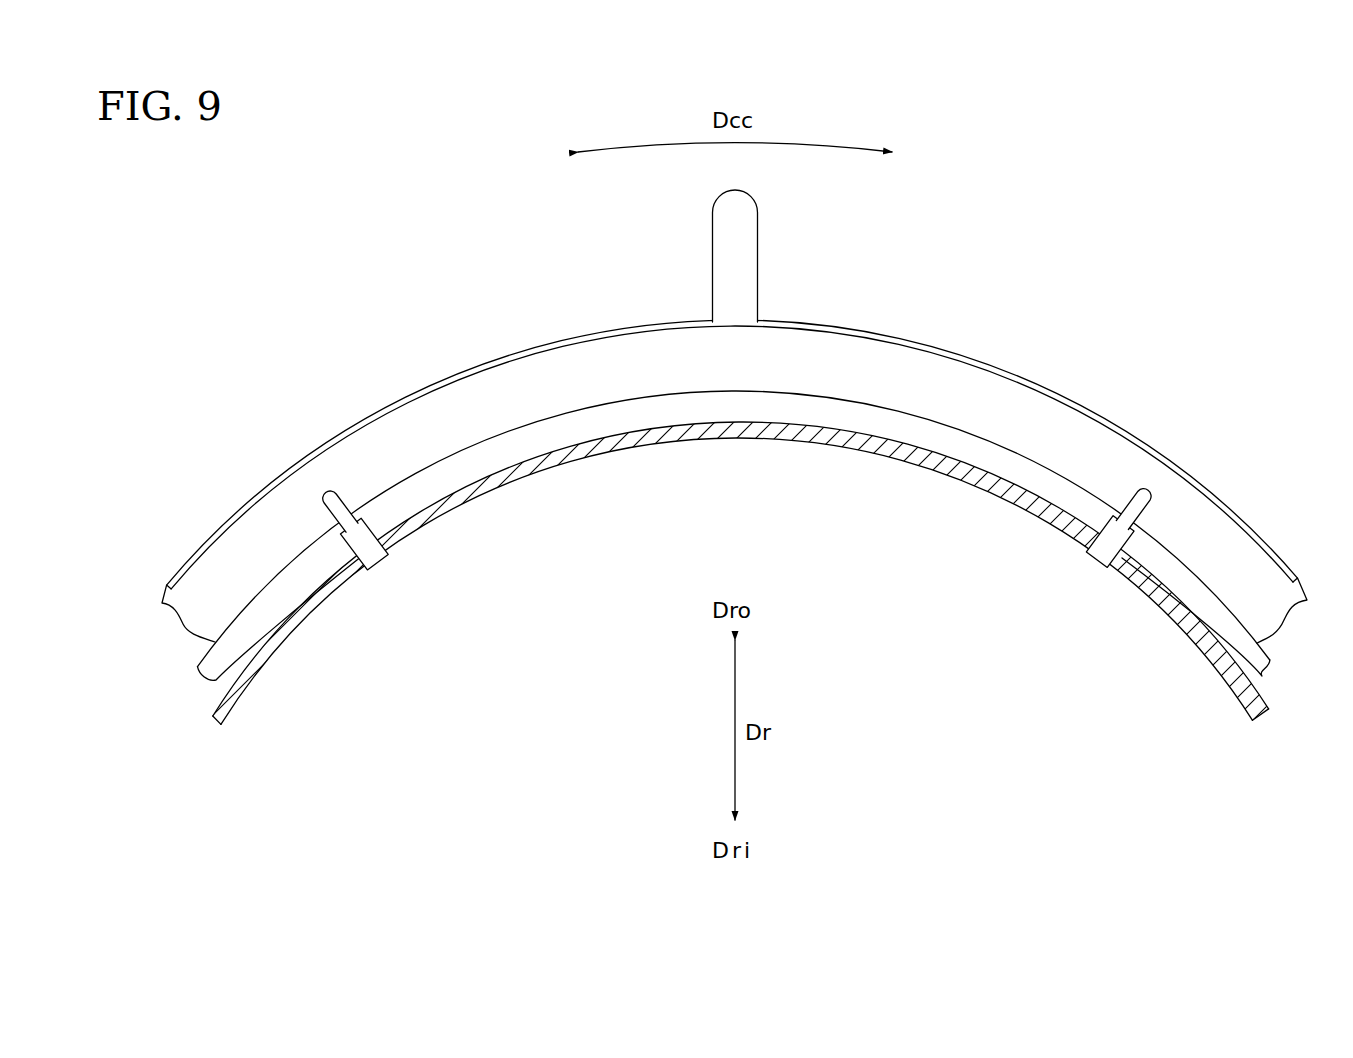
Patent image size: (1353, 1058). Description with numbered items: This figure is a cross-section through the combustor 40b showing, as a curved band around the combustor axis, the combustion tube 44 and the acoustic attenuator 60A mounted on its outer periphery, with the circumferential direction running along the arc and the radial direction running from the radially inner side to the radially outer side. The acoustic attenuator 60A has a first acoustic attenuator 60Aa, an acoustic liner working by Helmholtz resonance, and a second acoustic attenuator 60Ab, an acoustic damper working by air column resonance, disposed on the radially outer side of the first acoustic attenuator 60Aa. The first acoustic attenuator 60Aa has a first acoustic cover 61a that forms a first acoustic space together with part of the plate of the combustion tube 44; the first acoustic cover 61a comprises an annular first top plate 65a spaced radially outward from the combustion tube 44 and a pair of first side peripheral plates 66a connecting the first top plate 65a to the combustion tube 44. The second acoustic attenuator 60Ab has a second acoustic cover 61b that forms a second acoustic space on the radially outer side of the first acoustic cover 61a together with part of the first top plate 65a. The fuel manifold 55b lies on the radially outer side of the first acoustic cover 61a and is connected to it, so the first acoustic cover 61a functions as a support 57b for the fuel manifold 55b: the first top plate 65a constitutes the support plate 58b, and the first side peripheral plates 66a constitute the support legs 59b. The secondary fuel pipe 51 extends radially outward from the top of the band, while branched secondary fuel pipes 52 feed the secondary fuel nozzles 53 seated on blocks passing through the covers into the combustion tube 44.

The combustor 40b is at (1182, 318).
The combustion tube 44 is at (641, 437).
The secondary fuel pipe 51 is at (754, 228).
The branched secondary fuel pipe 52 is at (324, 494).
The secondary fuel nozzle 53 is at (378, 566).
The fuel manifold 55b is at (553, 356).
The support 57b is at (810, 420).
The support plate 58b is at (905, 400).
The support leg 59b is at (940, 448).
The acoustic attenuator 60A is at (182, 632).
The first acoustic attenuator 60Aa is at (992, 434).
The second acoustic attenuator 60Ab is at (466, 356).
The first acoustic cover 61a is at (810, 420).
The second acoustic cover 61b is at (402, 398).
The first top plate 65a is at (905, 400).
The first side peripheral plate 66a is at (940, 448).